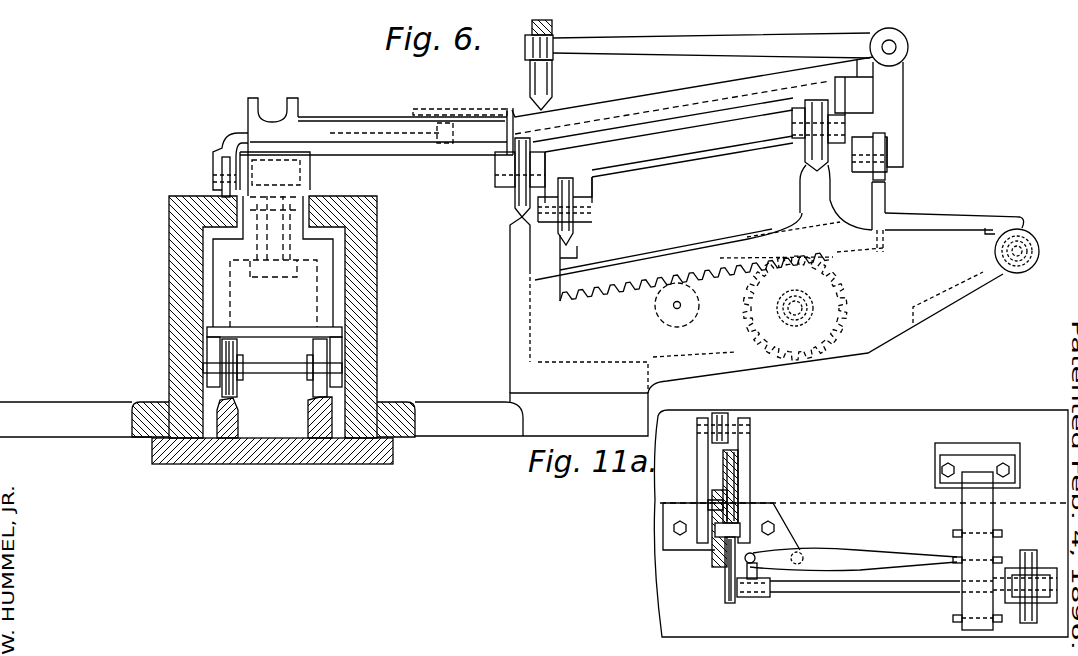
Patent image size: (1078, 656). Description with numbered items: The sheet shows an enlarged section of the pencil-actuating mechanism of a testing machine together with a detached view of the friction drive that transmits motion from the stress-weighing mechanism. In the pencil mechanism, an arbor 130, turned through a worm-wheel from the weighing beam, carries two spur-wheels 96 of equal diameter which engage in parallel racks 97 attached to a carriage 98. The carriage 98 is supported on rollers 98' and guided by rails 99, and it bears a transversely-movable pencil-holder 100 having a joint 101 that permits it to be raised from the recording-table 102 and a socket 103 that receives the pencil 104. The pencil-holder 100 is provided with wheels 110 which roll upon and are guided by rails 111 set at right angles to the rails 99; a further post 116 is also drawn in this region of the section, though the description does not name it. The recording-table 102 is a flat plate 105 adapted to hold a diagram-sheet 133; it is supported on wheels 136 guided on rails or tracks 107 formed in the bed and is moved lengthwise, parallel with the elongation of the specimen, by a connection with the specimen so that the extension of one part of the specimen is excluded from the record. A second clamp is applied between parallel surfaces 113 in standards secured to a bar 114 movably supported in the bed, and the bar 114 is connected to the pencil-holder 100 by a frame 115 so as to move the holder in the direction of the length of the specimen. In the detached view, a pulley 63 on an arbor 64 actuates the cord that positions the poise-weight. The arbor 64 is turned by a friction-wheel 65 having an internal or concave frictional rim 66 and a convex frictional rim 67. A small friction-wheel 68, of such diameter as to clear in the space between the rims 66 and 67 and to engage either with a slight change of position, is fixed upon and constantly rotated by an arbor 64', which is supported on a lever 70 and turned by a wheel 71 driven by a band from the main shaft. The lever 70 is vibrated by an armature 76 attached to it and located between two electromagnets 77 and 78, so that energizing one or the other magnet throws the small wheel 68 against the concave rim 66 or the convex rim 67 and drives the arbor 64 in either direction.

In FIG. 6, the spur-wheels 96 is at (832, 327).
In FIG. 6, the racks 97 is at (630, 303).
In FIG. 6, the carriage 98 is at (801, 264).
In FIG. 6, the rollers 98' is at (665, 307).
In FIG. 6, the rails 99 is at (1008, 233).
In FIG. 6, the pencil-holder 100 is at (672, 48).
In FIG. 6, the joint 101 is at (905, 50).
In FIG. 6, the recording-table 102 is at (876, 42).
In FIG. 6, the socket 103 is at (541, 70).
In FIG. 6, the pencil 104 is at (548, 101).
In FIG. 6, the flat plate 105 is at (736, 92).
In FIG. 6, the rails or tracks 107 is at (515, 232).
In FIG. 6, the wheels 110 is at (592, 218).
In FIG. 6, the rails 111 is at (569, 237).
In FIG. 6, the parallel surfaces 113 is at (272, 113).
In FIG. 6, the bar 114 is at (273, 261).
In FIG. 6, the frame 115 is at (409, 156).
In FIG. 6, the post 116 is at (889, 197).
In FIG. 6, the arbor 130 is at (843, 298).
In FIG. 6, the diagram-sheet 133 is at (686, 80).
In FIG. 6, the wheels 136 is at (514, 196).
In FIG. 11A, the pulley 63 is at (710, 500).
In FIG. 11A, the arbor 64 is at (706, 499).
In FIG. 11A, the arbor 64' is at (865, 593).
In FIG. 11A, the friction-wheel 65 is at (728, 565).
In FIG. 11A, the internal or concave frictional rim 66 is at (740, 460).
In FIG. 11A, the convex frictional rim 67 is at (742, 478).
In FIG. 11A, the small friction-wheel 68 is at (736, 588).
In FIG. 11A, the lever 70 is at (826, 554).
In FIG. 11A, the wheel 71 is at (1028, 550).
In FIG. 11A, the armature 76 is at (960, 545).
In FIG. 11A, the electromagnet 77 is at (953, 533).
In FIG. 11A, the electromagnet 78 is at (955, 562).